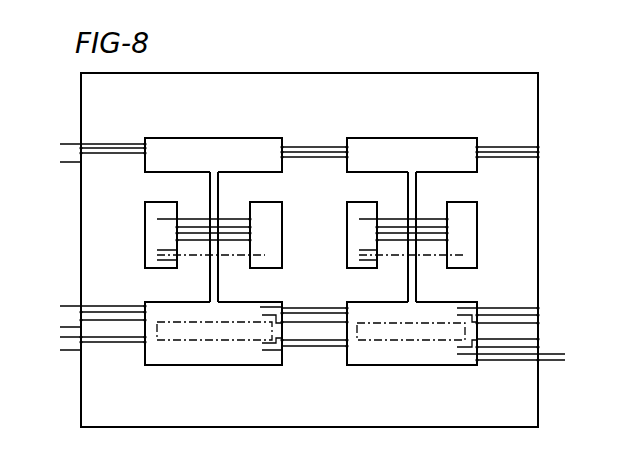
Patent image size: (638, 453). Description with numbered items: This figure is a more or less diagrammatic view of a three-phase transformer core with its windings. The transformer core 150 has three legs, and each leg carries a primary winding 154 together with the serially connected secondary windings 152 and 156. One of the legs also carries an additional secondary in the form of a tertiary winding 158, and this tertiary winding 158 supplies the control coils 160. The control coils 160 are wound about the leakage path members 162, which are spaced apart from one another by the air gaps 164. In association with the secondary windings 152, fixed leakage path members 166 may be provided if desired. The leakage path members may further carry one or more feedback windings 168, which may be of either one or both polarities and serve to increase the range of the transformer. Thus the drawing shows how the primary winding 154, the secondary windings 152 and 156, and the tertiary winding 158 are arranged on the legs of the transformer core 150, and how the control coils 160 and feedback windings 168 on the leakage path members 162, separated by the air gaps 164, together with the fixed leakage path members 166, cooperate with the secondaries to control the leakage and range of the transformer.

The transformer core 150 is at (534, 91).
The secondary winding 152 is at (88, 306).
The primary winding 154 is at (90, 343).
The secondary winding 156 is at (94, 143).
The tertiary winding 158 is at (548, 362).
The control coils 160 is at (235, 220).
The leakage path members 162 is at (223, 188).
The air gaps 164 is at (213, 175).
The fixed leakage path members 166 is at (243, 332).
The feedback windings 168 is at (255, 257).